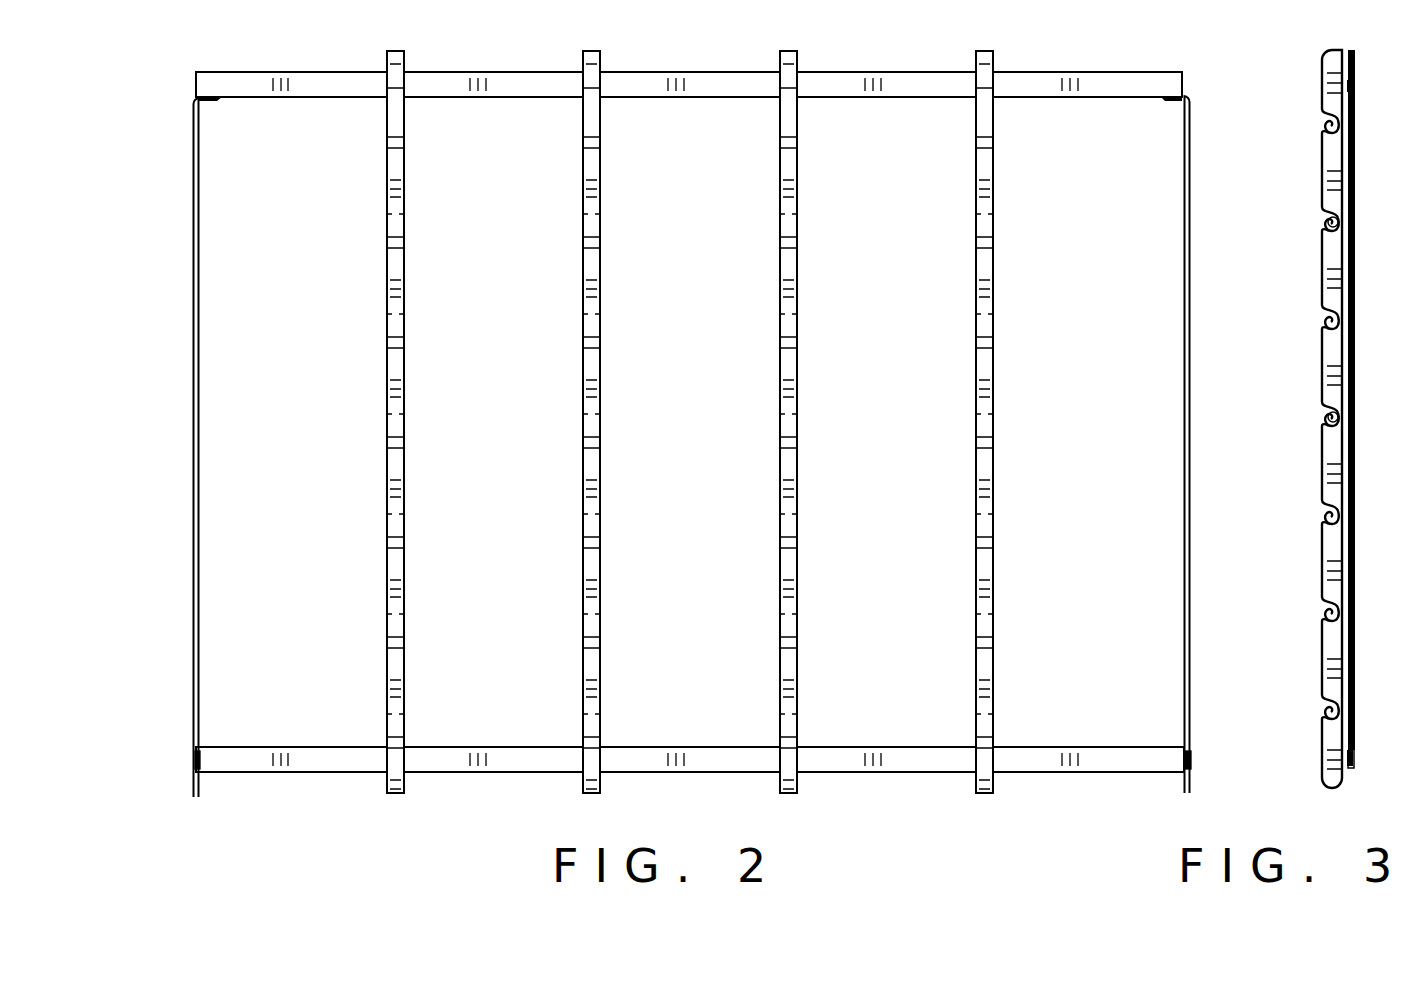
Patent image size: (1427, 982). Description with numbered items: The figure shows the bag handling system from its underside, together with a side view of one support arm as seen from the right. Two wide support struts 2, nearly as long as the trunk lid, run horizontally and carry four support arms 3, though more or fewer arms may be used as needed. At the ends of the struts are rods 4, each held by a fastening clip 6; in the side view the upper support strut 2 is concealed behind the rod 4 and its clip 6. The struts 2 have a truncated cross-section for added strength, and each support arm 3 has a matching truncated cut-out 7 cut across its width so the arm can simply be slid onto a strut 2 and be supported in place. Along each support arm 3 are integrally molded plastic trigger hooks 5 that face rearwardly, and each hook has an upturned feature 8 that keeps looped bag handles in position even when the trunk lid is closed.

In FIG. 2, the support strut 2 is at (510, 72).
In FIG. 3, the support strut 2 is at (1353, 758).
In FIG. 2, the support arm 3 is at (406, 390).
In FIG. 3, the support arm 3 is at (1320, 548).
In FIG. 2, the rod 4 is at (193, 452).
In FIG. 3, the rod 4 is at (1362, 300).
In FIG. 2, the trigger hook 5 is at (1043, 822).
In FIG. 3, the trigger hook 5 is at (1330, 232).
In FIG. 2, the fastening clip 6 is at (195, 760).
In FIG. 3, the fastening clip 6 is at (1355, 86).
In FIG. 3, the truncated cut-out 7 is at (1347, 757).
In FIG. 3, the upturned feature 8 is at (1328, 212).